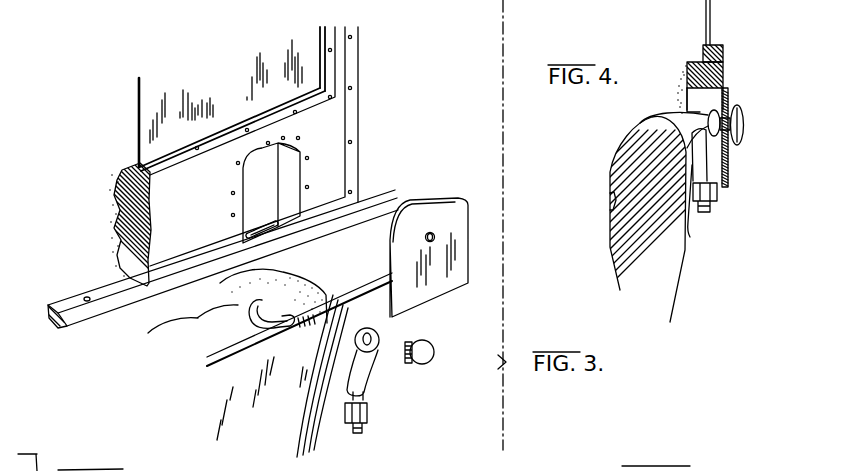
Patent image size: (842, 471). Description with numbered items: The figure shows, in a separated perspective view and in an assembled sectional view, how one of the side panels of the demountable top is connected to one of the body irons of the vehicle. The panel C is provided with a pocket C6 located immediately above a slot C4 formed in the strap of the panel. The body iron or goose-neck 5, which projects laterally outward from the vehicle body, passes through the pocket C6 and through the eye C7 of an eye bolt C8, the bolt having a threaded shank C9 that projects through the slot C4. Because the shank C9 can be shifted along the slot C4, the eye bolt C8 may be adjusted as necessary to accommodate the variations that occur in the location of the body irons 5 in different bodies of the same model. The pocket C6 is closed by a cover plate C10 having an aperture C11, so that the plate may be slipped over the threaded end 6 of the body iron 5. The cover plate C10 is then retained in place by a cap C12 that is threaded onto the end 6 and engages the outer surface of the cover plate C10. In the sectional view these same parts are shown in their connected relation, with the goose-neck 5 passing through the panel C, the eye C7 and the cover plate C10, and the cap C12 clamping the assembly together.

In FIG. 3, the panel C is at (338, 117).
In FIG. 4, the panel C is at (725, 58).
In FIG. 3, the slot C4 is at (277, 227).
In FIG. 3, the pocket C6 is at (268, 190).
In FIG. 4, the pocket C6 is at (715, 97).
In FIG. 3, the eye C7 is at (378, 343).
In FIG. 4, the eye C7 is at (735, 107).
In FIG. 3, the eye bolt C8 is at (358, 360).
In FIG. 4, the eye bolt C8 is at (712, 155).
In FIG. 3, the threaded shank C9 is at (368, 401).
In FIG. 4, the threaded shank C9 is at (713, 207).
In FIG. 3, the cover plate C10 is at (457, 213).
In FIG. 4, the cover plate C10 is at (722, 180).
In FIG. 3, the aperture C11 is at (430, 233).
In FIG. 3, the cap C12 is at (434, 352).
In FIG. 4, the cap C12 is at (744, 118).
In FIG. 3, the body iron 5 is at (282, 328).
In FIG. 3, the threaded end 6 is at (293, 312).